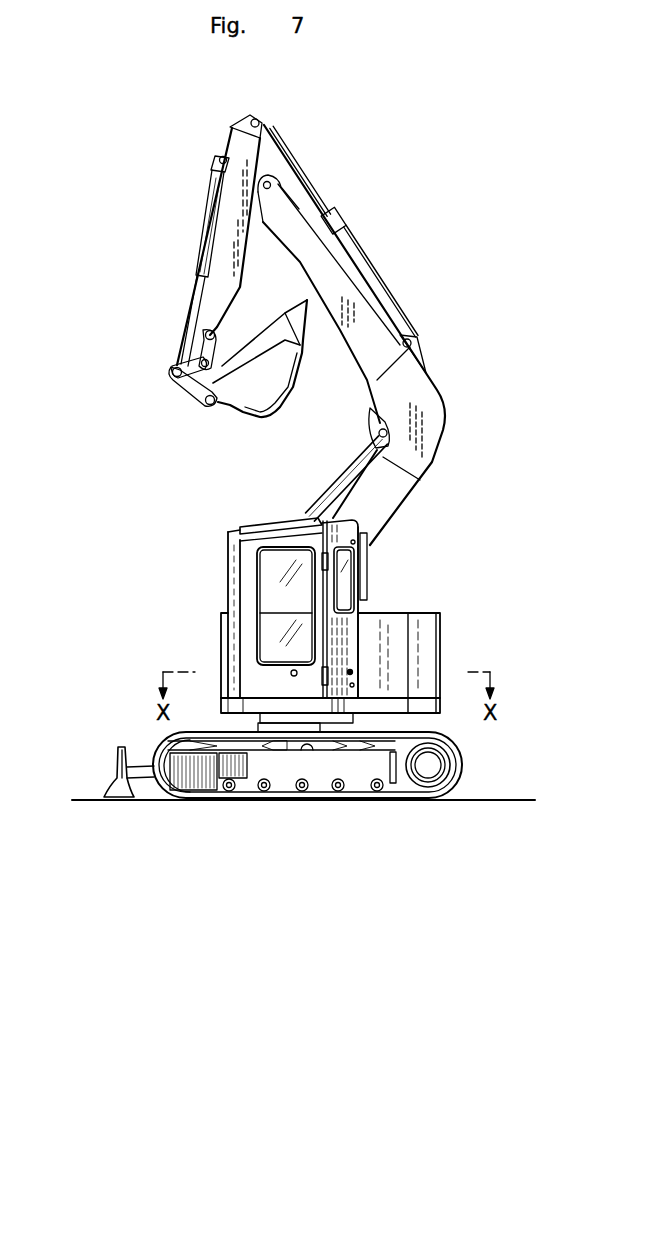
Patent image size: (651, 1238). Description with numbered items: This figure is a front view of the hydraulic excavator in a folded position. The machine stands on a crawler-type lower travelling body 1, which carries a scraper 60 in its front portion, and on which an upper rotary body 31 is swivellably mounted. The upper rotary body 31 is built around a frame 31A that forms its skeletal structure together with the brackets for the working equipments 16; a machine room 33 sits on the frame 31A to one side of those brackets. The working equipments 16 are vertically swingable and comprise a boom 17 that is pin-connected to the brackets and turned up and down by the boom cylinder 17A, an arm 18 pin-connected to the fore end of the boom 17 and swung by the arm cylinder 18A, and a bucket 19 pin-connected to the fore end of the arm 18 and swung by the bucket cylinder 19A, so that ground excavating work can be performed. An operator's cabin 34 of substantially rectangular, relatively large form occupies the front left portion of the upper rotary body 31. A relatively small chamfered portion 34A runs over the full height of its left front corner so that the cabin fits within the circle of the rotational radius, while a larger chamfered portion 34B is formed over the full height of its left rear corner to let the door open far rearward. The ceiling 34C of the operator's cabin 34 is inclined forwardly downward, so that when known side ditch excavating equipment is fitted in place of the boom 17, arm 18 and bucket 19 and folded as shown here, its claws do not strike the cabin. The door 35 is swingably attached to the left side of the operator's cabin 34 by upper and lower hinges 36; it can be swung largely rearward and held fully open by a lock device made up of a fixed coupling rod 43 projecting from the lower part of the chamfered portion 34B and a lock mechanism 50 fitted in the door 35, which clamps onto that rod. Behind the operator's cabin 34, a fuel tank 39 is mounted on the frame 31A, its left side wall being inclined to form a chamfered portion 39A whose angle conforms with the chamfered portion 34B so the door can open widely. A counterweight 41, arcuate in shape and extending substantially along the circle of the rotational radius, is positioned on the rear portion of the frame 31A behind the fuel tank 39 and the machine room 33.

The lower travelling body 1 is at (467, 750).
The working equipments 16 is at (352, 188).
The boom 17 is at (437, 398).
The boom cylinder 17A is at (355, 487).
The arm 18 is at (232, 212).
The arm cylinder 18A is at (375, 296).
The bucket 19 is at (250, 400).
The bucket cylinder 19A is at (198, 256).
The upper rotary body 31 is at (208, 620).
The frame 31A is at (377, 703).
The machine room 33 is at (223, 644).
The operator's cabin 34 is at (240, 540).
The chamfered portion 34A is at (233, 580).
The chamfered portion 34B is at (350, 627).
The ceiling 34C is at (262, 525).
The door 35 is at (248, 563).
The hinges 36 is at (327, 515).
The fuel tank 39 is at (402, 632).
The chamfered portion 39A is at (405, 632).
The counterweight 41 is at (428, 643).
The fixed coupling rod 43 is at (365, 665).
The lock mechanism 50 is at (291, 677).
The scraper 60 is at (115, 792).